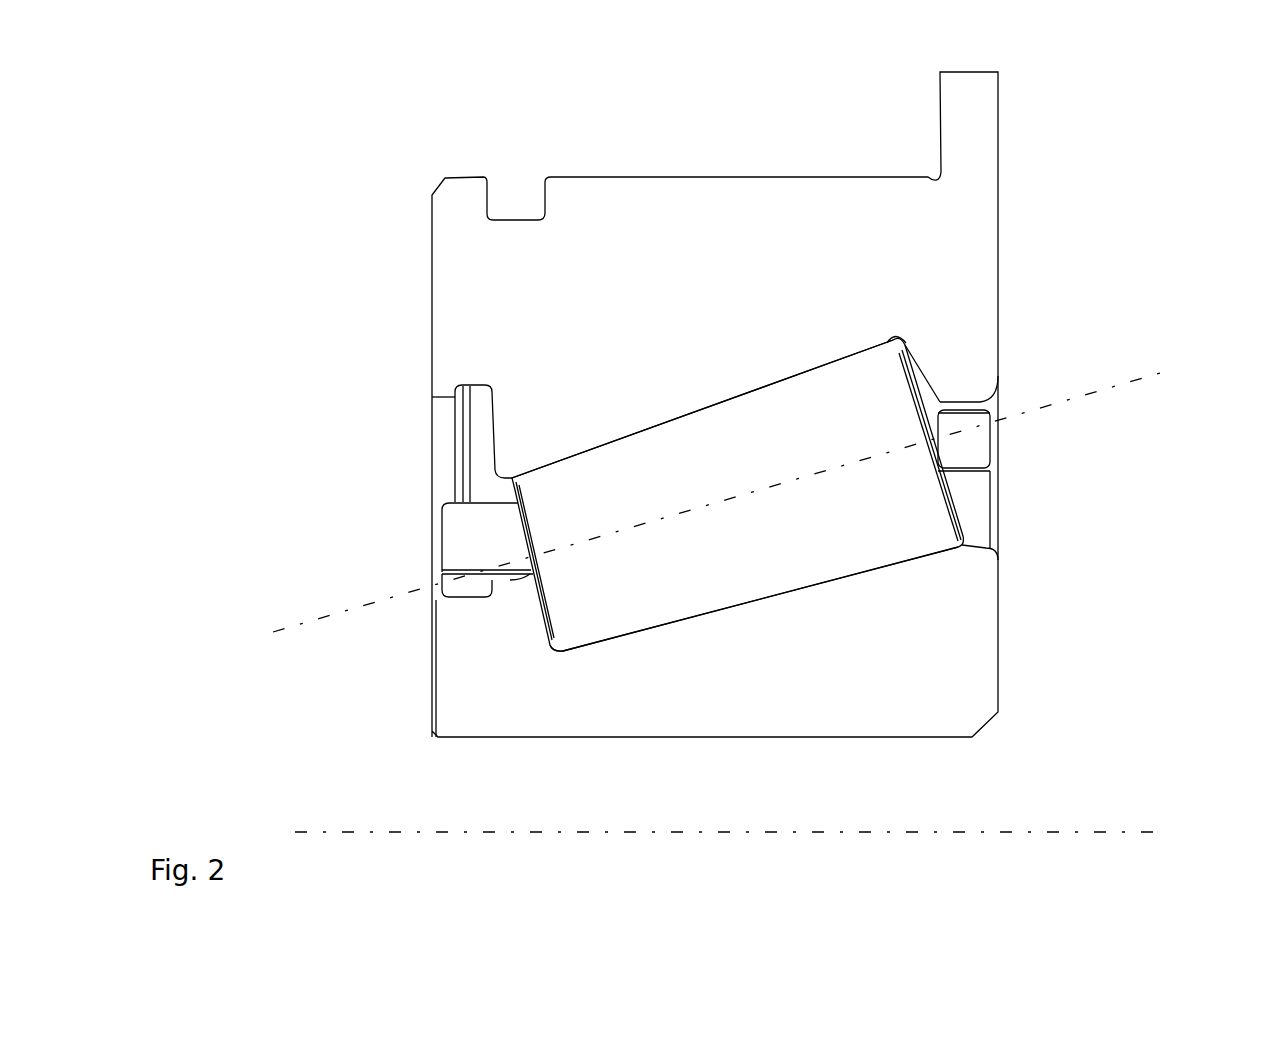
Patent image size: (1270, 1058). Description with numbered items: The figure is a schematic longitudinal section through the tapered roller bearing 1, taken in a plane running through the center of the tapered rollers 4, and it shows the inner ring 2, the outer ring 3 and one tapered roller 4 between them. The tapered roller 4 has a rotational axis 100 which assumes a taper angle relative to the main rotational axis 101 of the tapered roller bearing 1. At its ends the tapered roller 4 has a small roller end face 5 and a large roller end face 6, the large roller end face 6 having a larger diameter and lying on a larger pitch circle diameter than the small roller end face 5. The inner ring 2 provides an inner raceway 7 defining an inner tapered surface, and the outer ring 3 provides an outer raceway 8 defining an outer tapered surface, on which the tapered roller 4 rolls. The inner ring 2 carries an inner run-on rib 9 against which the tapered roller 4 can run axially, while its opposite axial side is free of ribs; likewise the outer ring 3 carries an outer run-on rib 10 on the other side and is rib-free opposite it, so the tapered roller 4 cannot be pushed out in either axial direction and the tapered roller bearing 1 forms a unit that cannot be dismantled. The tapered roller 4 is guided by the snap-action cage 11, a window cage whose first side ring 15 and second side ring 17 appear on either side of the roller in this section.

The tapered roller bearing 1 is at (256, 121).
The inner ring 2 is at (728, 725).
The outer ring 3 is at (728, 245).
The tapered roller 4 is at (728, 495).
The small roller end face 5 is at (545, 622).
The large roller end face 6 is at (917, 373).
The inner raceway 7 is at (641, 623).
The outer raceway 8 is at (597, 462).
The inner run-on rib 9 is at (511, 623).
The outer run-on rib 10 is at (931, 388).
The snap-action cage 11 is at (1082, 442).
The first side ring 15 is at (452, 550).
The second side ring 17 is at (952, 463).
The rotational axis 100 is at (1120, 387).
The main rotational axis 101 is at (1088, 832).